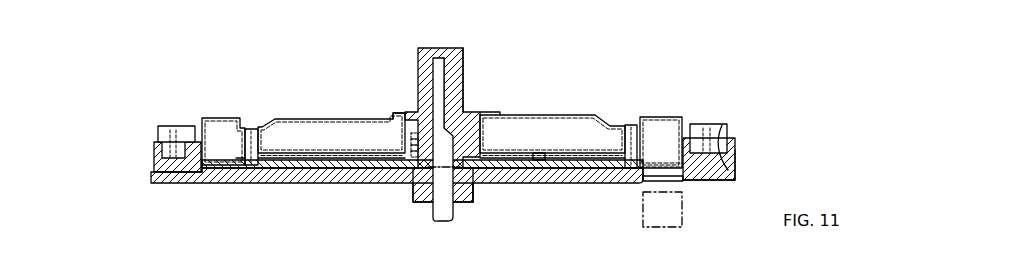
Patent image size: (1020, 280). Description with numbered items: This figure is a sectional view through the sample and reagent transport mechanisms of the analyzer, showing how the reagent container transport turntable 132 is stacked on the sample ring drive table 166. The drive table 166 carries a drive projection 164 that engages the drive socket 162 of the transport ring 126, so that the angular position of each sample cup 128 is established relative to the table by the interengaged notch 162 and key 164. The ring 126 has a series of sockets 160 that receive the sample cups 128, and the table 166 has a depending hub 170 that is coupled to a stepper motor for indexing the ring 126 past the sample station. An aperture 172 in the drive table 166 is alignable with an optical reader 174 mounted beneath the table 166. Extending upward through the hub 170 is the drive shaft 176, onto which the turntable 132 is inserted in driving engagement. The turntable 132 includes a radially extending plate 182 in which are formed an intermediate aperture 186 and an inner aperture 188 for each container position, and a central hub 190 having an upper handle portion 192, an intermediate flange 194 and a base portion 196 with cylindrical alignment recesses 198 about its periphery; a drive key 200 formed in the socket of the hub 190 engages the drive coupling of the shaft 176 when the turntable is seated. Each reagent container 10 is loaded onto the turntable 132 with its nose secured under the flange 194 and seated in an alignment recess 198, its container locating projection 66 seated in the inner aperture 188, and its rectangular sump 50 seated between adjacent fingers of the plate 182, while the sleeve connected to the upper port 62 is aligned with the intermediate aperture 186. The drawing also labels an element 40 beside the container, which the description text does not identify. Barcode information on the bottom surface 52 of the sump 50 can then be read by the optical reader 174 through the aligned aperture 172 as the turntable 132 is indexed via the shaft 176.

The reagent container 10 is at (325, 103).
The collar 40 is at (222, 118).
The sump 50 is at (215, 170).
The bottom surface 52 is at (672, 177).
The port 62 is at (250, 128).
The container locating projection 66 is at (540, 157).
The transport ring 126 is at (163, 160).
The sample cups 128 is at (178, 123).
The transport table 132 is at (309, 173).
The sockets 160 is at (722, 127).
The drive socket 162 is at (733, 176).
The drive projection 164 is at (733, 153).
The drive table 166 is at (390, 175).
The hub 170 is at (478, 188).
The aperture 172 is at (647, 177).
The optical reader 174 is at (643, 205).
The drive shaft 176 is at (452, 208).
The radially extending plate 182 is at (248, 167).
The aperture 186 is at (255, 163).
The aperture 188 is at (474, 183).
The hub 190 is at (418, 48).
The upper handle portion 192 is at (460, 55).
The intermediate flange 194 is at (490, 112).
The base portion 196 is at (411, 140).
The alignment recesses 198 is at (484, 141).
The drive key 200 is at (440, 85).